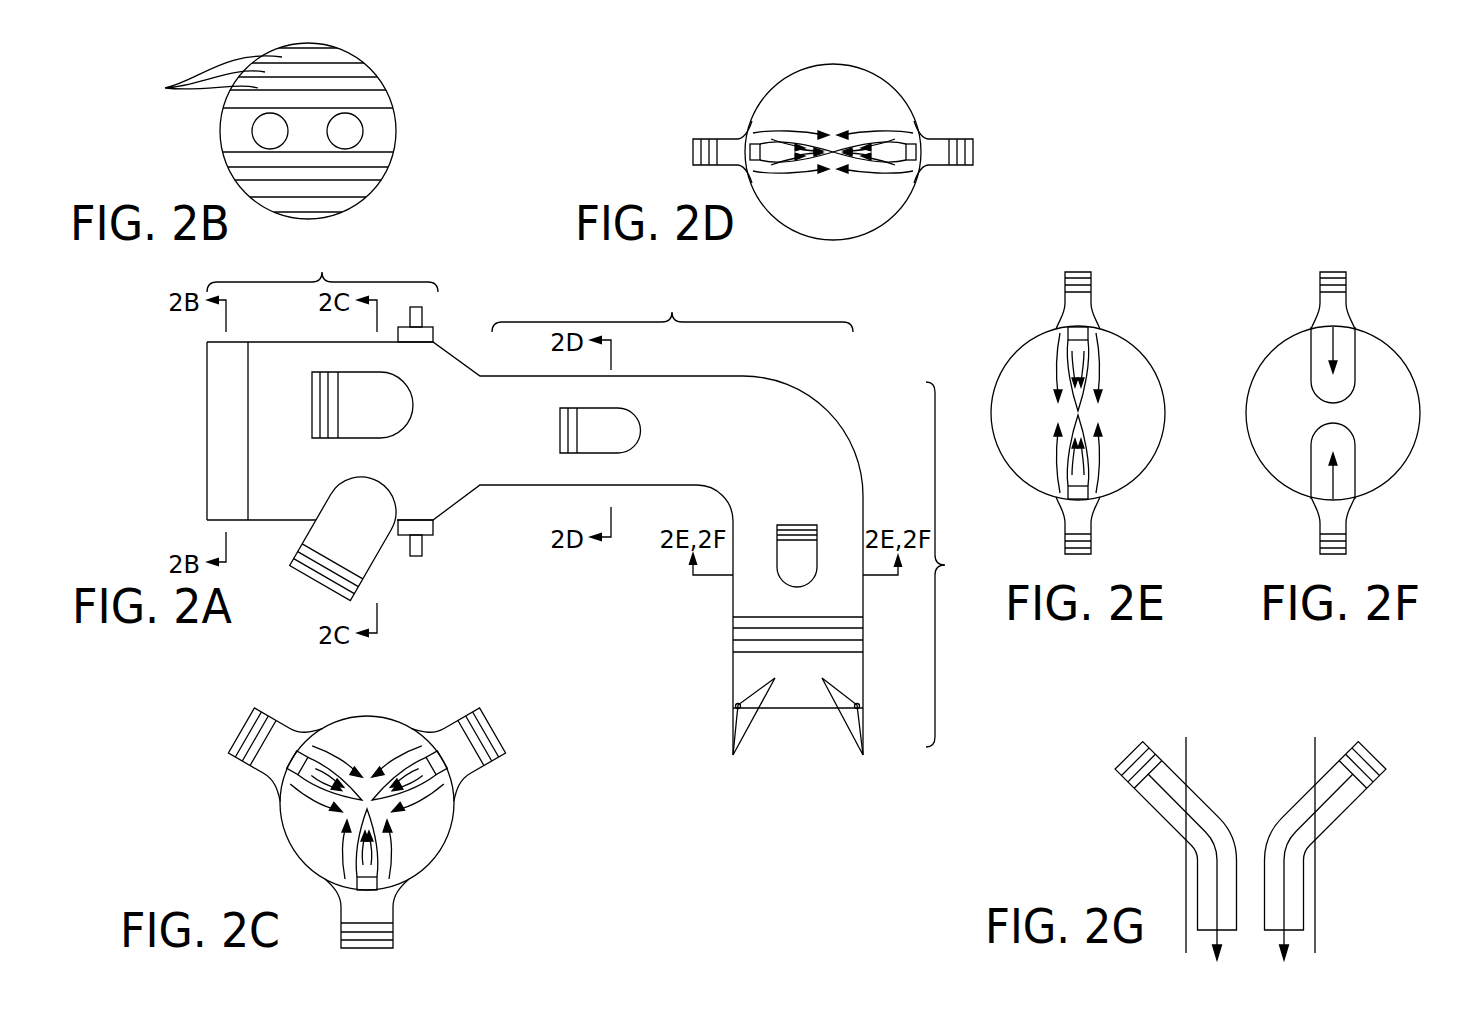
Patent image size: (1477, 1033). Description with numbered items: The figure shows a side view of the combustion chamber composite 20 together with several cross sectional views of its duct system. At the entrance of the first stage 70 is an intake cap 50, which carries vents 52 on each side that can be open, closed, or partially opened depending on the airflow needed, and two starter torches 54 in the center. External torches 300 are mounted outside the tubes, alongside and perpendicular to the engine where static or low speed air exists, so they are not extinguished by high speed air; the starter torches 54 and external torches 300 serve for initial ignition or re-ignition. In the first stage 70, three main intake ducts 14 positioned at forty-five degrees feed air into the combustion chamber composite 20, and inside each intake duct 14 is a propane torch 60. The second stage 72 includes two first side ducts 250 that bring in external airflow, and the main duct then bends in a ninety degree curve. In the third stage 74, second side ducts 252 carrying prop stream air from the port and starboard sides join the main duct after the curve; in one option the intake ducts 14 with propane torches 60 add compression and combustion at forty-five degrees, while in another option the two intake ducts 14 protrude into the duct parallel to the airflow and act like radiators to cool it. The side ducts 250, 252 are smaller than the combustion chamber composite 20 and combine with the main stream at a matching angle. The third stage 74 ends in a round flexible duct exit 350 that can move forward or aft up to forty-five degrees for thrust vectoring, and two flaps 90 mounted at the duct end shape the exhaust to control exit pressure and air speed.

In FIG. 2A, the intake duct 14 is at (368, 395).
In FIG. 2C, the intake duct 14 is at (250, 735).
In FIG. 2D, the intake duct 14 is at (718, 150).
In FIG. 2E, the intake duct 14 is at (1072, 287).
In FIG. 2F, the intake duct 14 is at (1327, 287).
In FIG. 2G, the intake duct 14 is at (1158, 808).
In FIG. 2A, the combustion chamber composite 20 is at (425, 440).
In FIG. 2A, the intake cap 50 is at (223, 428).
In FIG. 2B, the intake cap 50 is at (396, 116).
In FIG. 2B, the vents 52 is at (205, 77).
In FIG. 2B, the starter torches 54 is at (270, 132).
In FIG. 2C, the propane torch 60 is at (337, 780).
In FIG. 2D, the propane torch 60 is at (795, 155).
In FIG. 2E, the propane torch 60 is at (1077, 378).
In FIG. 2F, the propane torch 60 is at (1332, 378).
In FIG. 2A, the first stage 70 is at (322, 267).
In FIG. 2A, the second stage 72 is at (672, 308).
In FIG. 2A, the third stage 74 is at (952, 564).
In FIG. 2A, the flaps 90 is at (740, 723).
In FIG. 2A, the first side ducts 250 is at (613, 435).
In FIG. 2A, the second side ducts 252 is at (797, 568).
In FIG. 2A, the external torches 300 is at (434, 337).
In FIG. 2A, the flexible duct exit 350 is at (775, 633).